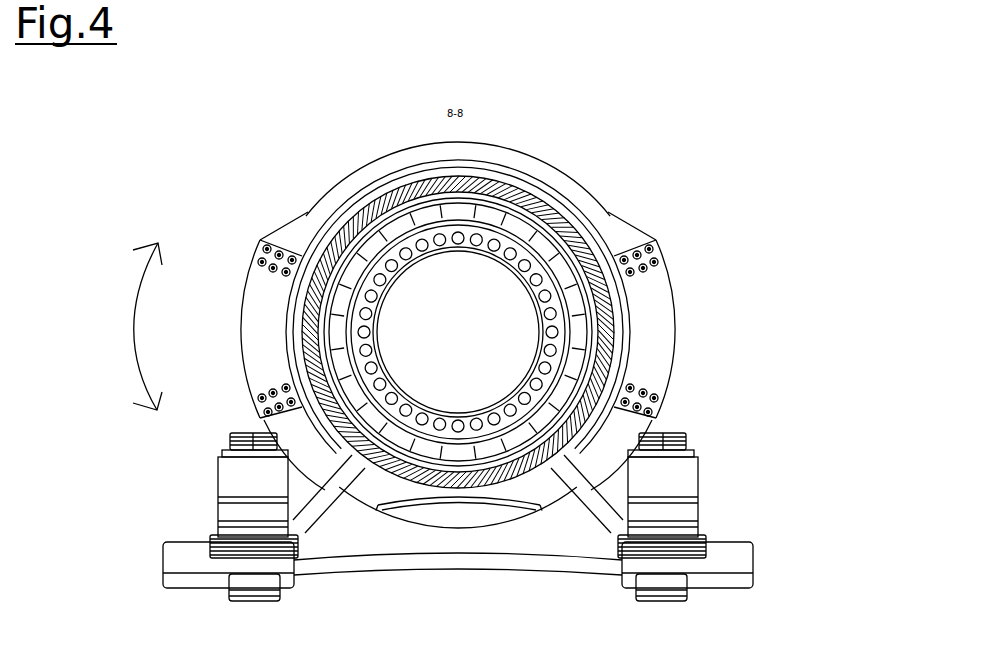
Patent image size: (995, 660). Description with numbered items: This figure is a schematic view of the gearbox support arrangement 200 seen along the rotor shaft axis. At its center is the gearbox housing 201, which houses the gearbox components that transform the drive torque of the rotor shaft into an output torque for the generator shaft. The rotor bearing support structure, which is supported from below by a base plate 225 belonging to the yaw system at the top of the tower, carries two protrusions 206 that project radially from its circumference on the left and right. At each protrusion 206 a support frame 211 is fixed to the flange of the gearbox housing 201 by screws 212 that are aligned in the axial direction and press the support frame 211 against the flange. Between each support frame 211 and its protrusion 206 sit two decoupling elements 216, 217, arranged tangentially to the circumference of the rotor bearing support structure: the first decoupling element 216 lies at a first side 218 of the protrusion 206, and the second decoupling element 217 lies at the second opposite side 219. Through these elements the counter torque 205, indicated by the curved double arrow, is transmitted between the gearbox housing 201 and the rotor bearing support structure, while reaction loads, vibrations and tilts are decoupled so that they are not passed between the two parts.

The gearbox support arrangement 200 is at (696, 108).
The gearbox housing 201 is at (605, 212).
The counter torque 205 is at (130, 330).
The protrusion 206 is at (243, 330).
The support frame 211 is at (279, 246).
The screw 212 is at (665, 410).
The decoupling element 216 is at (241, 286).
The second decoupling element 217 is at (246, 352).
The first side 218 is at (238, 289).
The second opposite side 219 is at (237, 363).
The base plate 225 is at (758, 561).